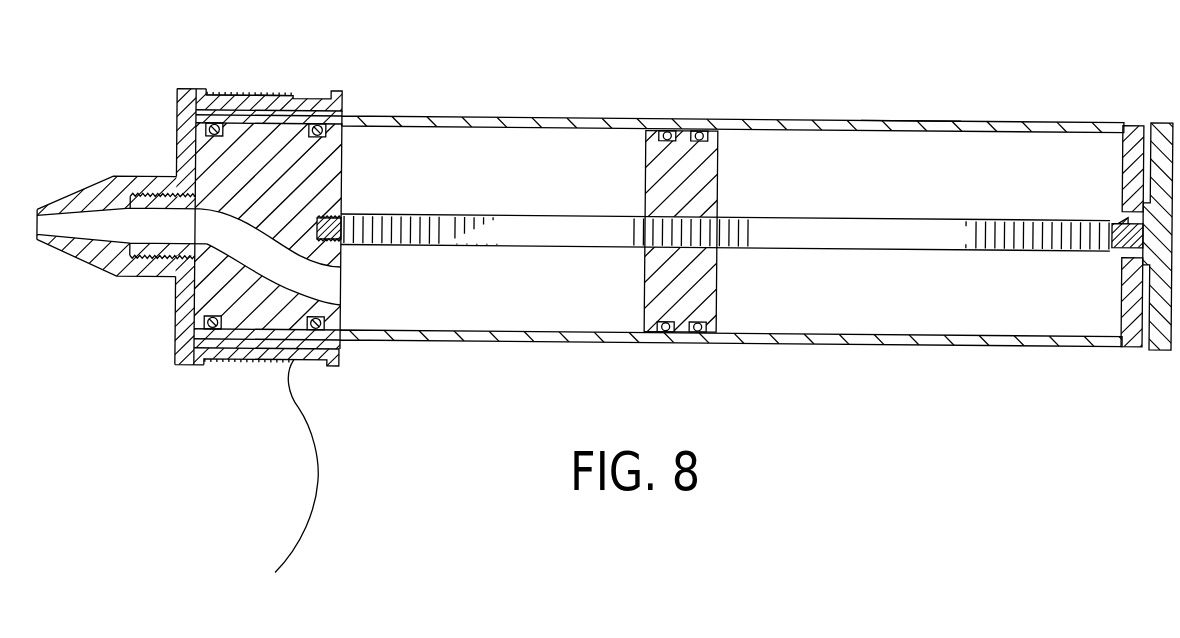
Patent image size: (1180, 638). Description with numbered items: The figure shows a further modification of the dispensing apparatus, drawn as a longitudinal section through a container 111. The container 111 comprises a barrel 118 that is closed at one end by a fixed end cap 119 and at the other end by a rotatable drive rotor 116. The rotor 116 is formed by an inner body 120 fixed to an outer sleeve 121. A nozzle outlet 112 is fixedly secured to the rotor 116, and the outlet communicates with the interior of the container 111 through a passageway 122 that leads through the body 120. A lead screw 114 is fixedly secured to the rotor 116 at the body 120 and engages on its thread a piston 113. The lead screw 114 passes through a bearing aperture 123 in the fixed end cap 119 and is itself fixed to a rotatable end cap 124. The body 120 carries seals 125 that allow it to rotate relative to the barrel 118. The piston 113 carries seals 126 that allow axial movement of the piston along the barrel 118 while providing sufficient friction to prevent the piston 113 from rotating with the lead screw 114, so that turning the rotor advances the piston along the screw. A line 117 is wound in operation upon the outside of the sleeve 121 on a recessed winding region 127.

The container 111 is at (543, 116).
The nozzle outlet 112 is at (130, 282).
The piston 113 is at (707, 192).
The lead screw 114 is at (912, 214).
The rotatable drive rotor 116 is at (185, 133).
The line 117 is at (320, 451).
The barrel 118 is at (907, 116).
The fixed end cap 119 is at (1122, 144).
The inner body 120 is at (330, 191).
The outer sleeve 121 is at (342, 100).
The passageway 122 is at (318, 297).
The bearing aperture 123 is at (1122, 206).
The rotatable end cap 124 is at (1160, 315).
The seals 125 is at (322, 138).
The seals 126 is at (657, 138).
The recessed winding region 127 is at (310, 98).